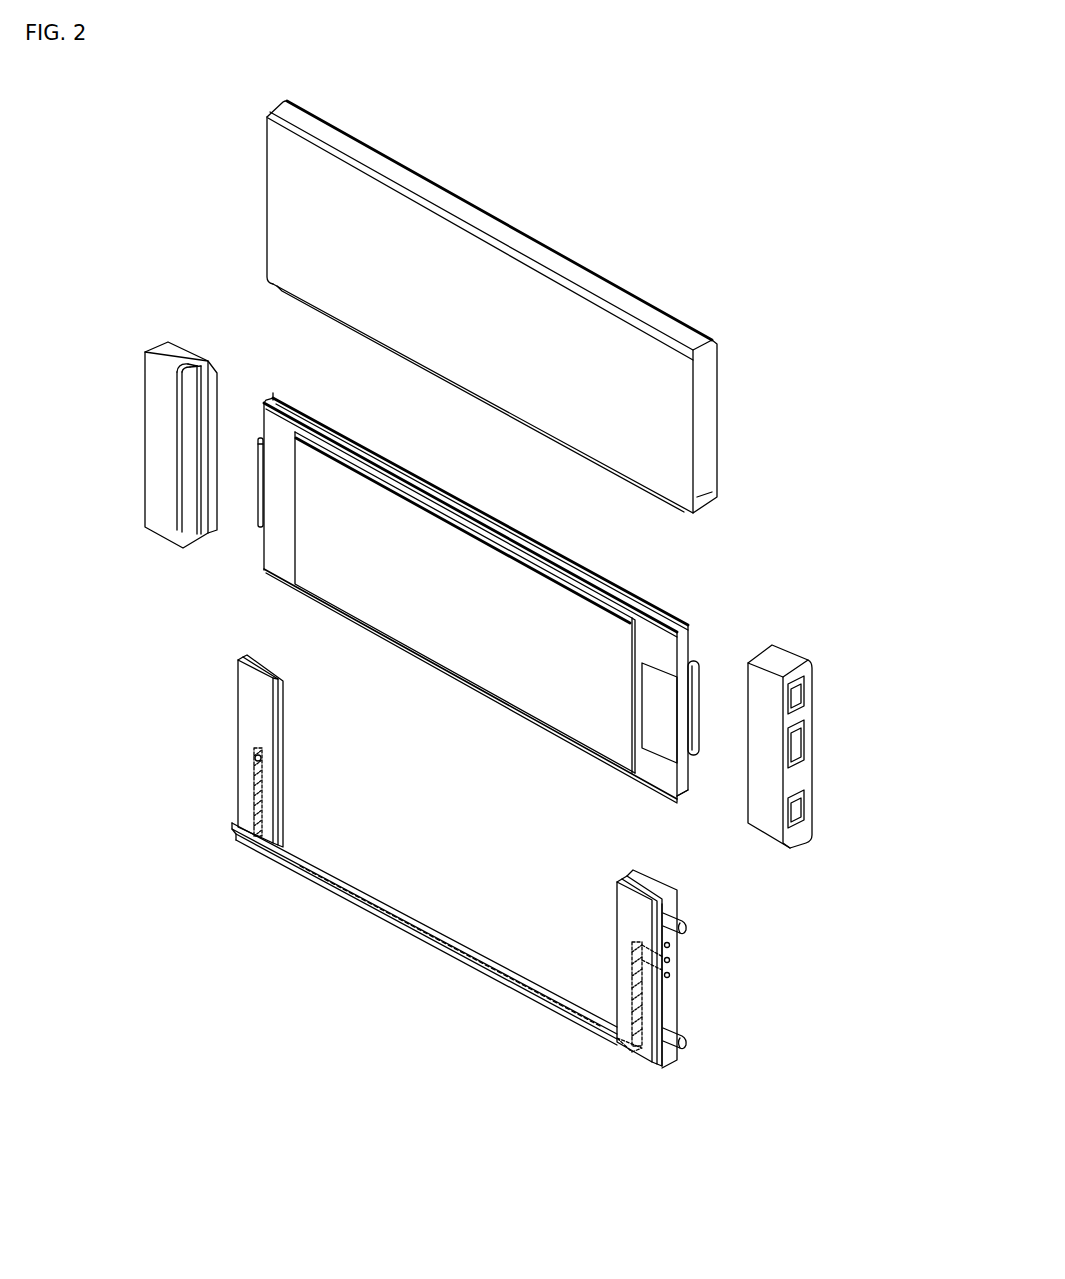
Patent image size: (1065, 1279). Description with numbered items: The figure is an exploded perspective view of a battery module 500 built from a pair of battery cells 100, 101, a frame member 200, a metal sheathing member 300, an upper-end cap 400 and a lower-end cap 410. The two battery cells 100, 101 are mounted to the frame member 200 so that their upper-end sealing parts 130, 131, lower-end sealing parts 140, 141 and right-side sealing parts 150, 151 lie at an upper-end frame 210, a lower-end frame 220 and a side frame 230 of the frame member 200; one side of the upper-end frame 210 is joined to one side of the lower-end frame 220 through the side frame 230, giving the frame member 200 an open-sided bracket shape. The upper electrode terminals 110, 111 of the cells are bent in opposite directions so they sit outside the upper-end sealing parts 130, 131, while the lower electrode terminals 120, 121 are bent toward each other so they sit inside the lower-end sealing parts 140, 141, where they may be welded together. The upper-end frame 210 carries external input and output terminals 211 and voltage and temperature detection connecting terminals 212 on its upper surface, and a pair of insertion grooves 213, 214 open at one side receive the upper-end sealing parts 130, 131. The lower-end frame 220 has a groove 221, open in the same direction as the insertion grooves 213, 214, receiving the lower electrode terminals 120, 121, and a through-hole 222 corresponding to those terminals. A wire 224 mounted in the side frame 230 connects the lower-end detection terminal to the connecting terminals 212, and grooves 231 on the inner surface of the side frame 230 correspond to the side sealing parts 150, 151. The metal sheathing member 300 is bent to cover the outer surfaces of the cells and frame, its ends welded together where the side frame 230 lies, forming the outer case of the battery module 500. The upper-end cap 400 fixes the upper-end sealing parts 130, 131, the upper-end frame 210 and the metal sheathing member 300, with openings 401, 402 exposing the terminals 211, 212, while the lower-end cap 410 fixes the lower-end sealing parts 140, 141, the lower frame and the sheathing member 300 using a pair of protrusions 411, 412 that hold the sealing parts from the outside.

The battery module 500 is at (108, 122).
The metal sheathing member 300 is at (490, 207).
The battery cell 100 is at (475, 577).
The battery cell 101 is at (505, 519).
The upper electrode terminal 110 is at (655, 707).
The upper electrode terminal 111 is at (700, 663).
The lower electrode terminal 120 is at (216, 460).
The lower electrode terminal 121 is at (261, 438).
The upper-end sealing part 130 is at (655, 775).
The upper-end sealing part 131 is at (673, 612).
The lower-end sealing part 140 is at (433, 617).
The lower-end sealing part 141 is at (525, 591).
The side sealing part 150 is at (443, 673).
The side sealing part 151 is at (470, 690).
The frame member 200 is at (464, 888).
The upper-end frame 210 is at (654, 996).
The external input and output terminals 211 is at (687, 928).
The voltage and temperature detection connecting terminals 212 is at (677, 965).
The insertion groove 213 is at (677, 1052).
The insertion groove 214 is at (677, 1003).
The lower-end frame 220 is at (255, 751).
The groove 221 is at (280, 792).
The through-hole 222 is at (253, 758).
The wire 224 is at (255, 787).
The side frame 230 is at (424, 934).
The grooves 231 is at (442, 942).
The upper-end cap 400 is at (844, 708).
The opening 401 is at (807, 688).
The opening 402 is at (805, 747).
The lower-end cap 410 is at (145, 428).
The protrusion 411 is at (216, 392).
The protrusion 412 is at (203, 410).